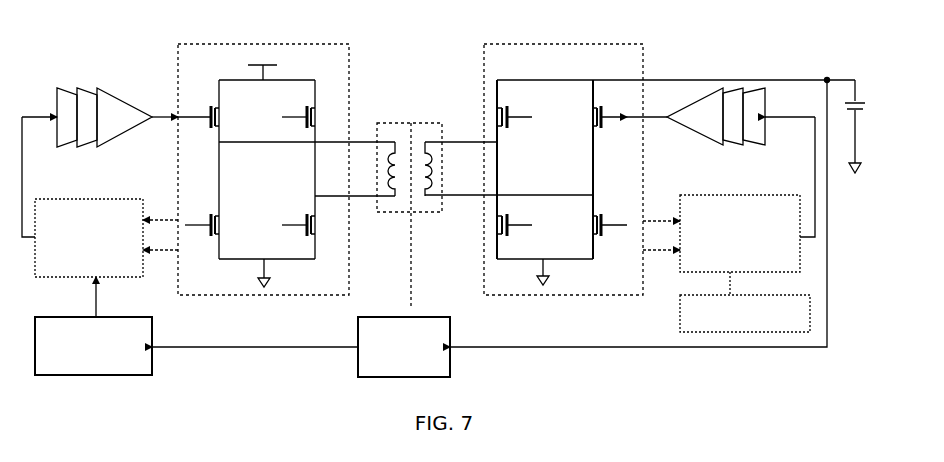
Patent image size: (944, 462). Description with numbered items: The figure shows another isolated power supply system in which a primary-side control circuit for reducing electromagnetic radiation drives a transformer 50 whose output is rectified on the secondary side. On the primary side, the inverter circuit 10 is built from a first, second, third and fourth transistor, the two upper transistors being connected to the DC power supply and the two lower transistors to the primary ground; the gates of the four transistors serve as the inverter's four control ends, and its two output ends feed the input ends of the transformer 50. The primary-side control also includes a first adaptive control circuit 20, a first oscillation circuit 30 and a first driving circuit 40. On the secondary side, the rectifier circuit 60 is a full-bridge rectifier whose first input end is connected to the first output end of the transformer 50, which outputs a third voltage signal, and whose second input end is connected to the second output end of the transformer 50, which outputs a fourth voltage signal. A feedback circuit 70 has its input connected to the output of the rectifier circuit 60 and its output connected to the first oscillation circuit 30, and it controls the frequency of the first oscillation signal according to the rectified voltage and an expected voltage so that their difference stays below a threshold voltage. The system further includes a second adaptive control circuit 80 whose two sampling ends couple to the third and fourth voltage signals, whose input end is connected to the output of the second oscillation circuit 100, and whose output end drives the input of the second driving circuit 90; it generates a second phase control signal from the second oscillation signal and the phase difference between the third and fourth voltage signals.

The inverter circuit 10 is at (349, 44).
The first adaptive control circuit 20 is at (105, 199).
The first oscillation circuit 30 is at (152, 330).
The first driving circuit 40 is at (108, 88).
The transformer 50 is at (442, 123).
The rectifier circuit 60 is at (643, 44).
The feedback circuit 70 is at (435, 317).
The second adaptive control circuit 80 is at (733, 195).
The second driving circuit 90 is at (702, 128).
The second oscillation circuit 100 is at (680, 297).